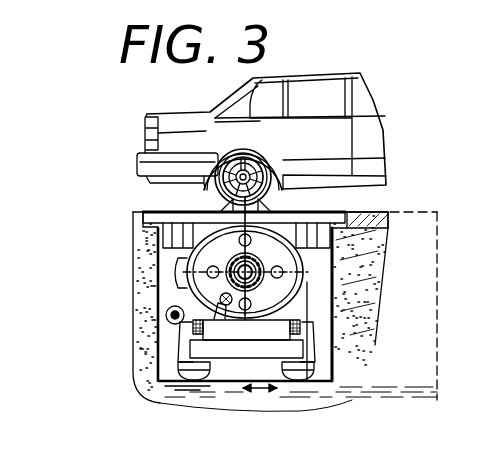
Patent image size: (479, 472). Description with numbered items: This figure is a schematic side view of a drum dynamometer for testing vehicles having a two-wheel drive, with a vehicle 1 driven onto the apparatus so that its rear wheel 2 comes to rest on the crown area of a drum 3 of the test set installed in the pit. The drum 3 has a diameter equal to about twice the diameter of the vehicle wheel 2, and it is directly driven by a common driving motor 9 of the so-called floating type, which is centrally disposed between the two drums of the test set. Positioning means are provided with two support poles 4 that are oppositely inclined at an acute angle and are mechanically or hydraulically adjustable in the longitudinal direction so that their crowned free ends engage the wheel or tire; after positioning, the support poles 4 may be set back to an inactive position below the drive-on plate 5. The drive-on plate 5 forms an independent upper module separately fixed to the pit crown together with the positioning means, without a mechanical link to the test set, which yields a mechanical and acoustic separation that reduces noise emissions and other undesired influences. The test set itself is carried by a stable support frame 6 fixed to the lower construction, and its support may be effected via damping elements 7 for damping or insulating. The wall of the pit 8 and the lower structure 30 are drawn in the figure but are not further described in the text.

The vehicle 1 is at (198, 123).
The vehicle wheel 2 is at (217, 191).
The drum 3 is at (308, 286).
The support pole 4 is at (270, 207).
The drive-on plate 5 is at (174, 220).
The support frame 6 is at (238, 350).
The damping element 7 is at (297, 375).
The pit wall 8 is at (348, 232).
The driving motor 9 is at (177, 273).
The guide rail 30 is at (190, 386).